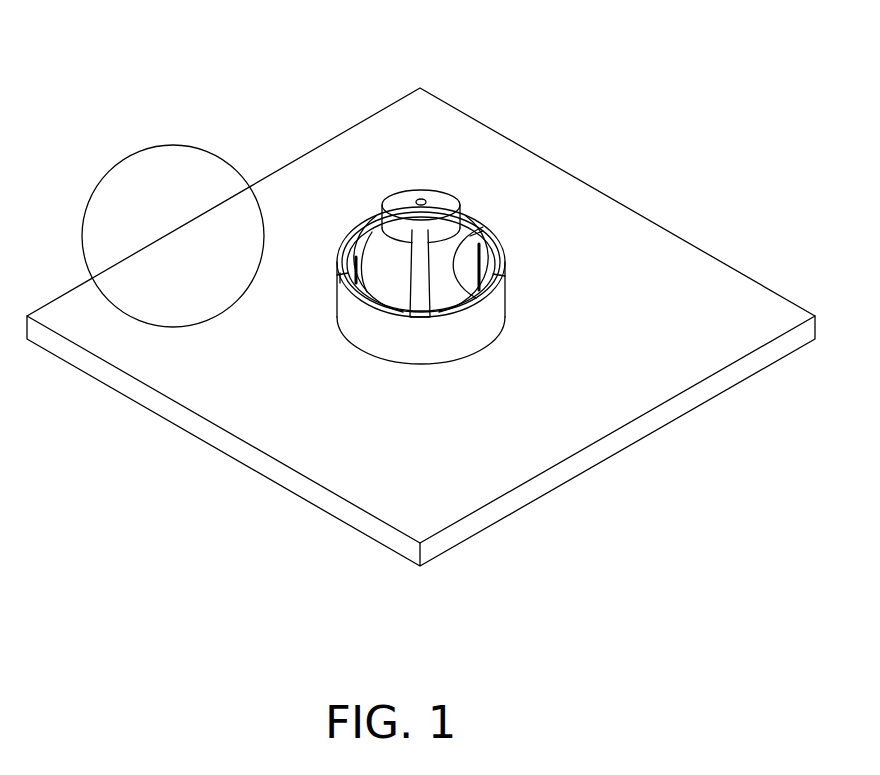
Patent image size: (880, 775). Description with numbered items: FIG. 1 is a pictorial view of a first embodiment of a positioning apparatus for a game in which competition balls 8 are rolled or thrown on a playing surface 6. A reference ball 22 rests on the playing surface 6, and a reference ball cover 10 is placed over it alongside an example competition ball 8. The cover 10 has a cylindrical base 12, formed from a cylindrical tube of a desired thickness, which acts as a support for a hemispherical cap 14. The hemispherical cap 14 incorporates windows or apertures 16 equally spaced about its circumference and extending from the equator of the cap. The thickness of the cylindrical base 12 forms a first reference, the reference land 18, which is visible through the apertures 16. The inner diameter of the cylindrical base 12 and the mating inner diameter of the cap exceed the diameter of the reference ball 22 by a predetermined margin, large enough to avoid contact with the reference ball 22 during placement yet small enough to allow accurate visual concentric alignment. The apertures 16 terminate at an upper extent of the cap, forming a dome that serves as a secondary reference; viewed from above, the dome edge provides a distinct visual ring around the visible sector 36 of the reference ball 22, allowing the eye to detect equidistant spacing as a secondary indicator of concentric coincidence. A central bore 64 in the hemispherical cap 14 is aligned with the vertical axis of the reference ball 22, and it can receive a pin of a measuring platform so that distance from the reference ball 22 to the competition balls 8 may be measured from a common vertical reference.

The playing surface 6 is at (635, 255).
The competition ball 8 is at (155, 182).
The reference ball cover 10 is at (522, 252).
The cylindrical base 12 is at (383, 338).
The hemispherical cap 14 is at (422, 278).
The apertures 16 is at (452, 256).
The reference land 18 is at (346, 276).
The reference ball 22 is at (388, 252).
The visible sector 36 is at (438, 198).
The central bore 64 is at (421, 199).